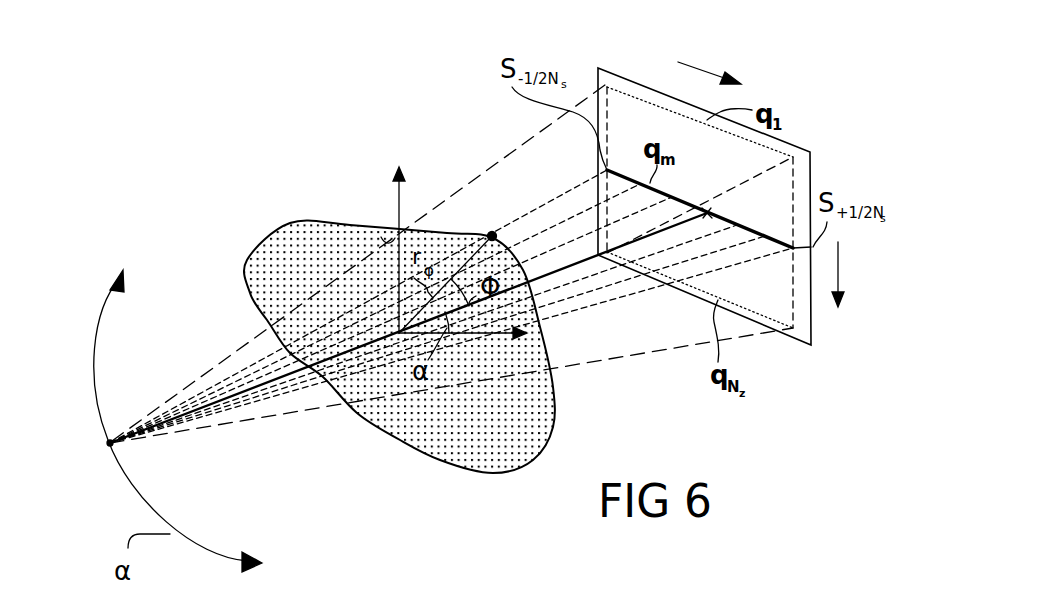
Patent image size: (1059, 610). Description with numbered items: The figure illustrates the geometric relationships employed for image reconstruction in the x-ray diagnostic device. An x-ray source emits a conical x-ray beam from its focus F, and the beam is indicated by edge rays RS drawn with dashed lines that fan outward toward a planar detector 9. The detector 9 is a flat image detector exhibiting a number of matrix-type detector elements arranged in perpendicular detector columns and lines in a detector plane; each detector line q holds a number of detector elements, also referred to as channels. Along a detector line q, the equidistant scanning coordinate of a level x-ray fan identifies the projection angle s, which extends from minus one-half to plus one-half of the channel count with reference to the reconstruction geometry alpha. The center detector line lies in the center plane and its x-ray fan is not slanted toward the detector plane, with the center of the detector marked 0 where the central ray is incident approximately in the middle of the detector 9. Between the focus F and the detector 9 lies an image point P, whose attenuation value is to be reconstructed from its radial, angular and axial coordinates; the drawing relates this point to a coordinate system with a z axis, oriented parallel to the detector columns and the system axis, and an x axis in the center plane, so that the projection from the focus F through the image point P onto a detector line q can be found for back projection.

The detector 9 is at (627, 75).
The focus F is at (110, 443).
The point in object P is at (493, 230).
The edge rays RS is at (540, 270).
The detector center 0 is at (712, 213).
The projection angle s is at (709, 58).
The detector line q is at (838, 275).
The z axis z is at (397, 205).
The x axis x is at (497, 347).